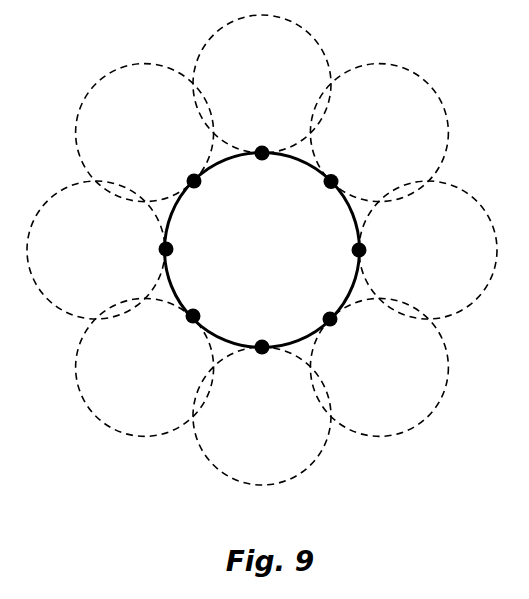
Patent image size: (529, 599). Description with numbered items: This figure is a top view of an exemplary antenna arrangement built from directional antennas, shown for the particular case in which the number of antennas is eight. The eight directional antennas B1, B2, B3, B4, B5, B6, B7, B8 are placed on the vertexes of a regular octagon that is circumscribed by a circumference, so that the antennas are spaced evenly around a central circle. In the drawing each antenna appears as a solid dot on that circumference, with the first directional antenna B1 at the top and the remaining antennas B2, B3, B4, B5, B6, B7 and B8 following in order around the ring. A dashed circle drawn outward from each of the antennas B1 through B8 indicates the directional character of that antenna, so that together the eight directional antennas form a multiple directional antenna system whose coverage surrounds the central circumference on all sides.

The directional antenna B1 is at (267, 168).
The directional antenna B2 is at (324, 195).
The directional antenna B3 is at (345, 254).
The directional antenna B4 is at (319, 308).
The directional antenna B5 is at (267, 334).
The directional antenna B6 is at (205, 309).
The directional antenna B7 is at (180, 255).
The directional antenna B8 is at (208, 191).